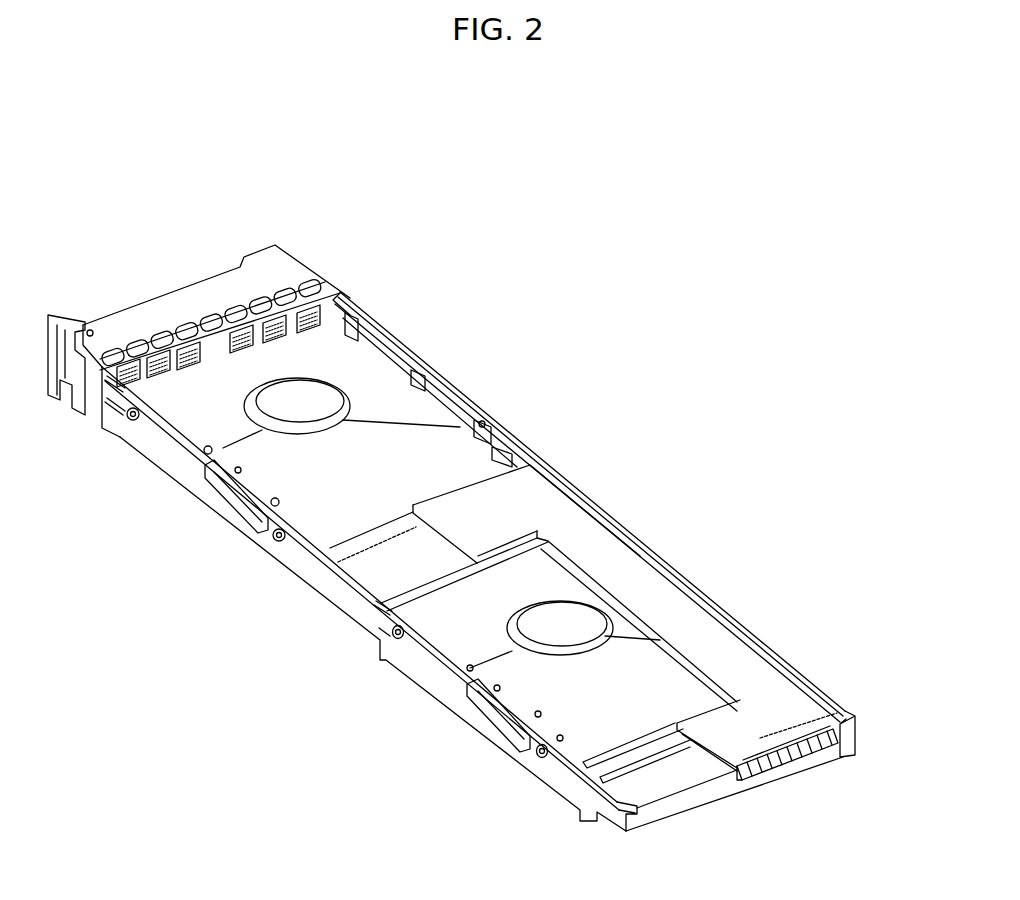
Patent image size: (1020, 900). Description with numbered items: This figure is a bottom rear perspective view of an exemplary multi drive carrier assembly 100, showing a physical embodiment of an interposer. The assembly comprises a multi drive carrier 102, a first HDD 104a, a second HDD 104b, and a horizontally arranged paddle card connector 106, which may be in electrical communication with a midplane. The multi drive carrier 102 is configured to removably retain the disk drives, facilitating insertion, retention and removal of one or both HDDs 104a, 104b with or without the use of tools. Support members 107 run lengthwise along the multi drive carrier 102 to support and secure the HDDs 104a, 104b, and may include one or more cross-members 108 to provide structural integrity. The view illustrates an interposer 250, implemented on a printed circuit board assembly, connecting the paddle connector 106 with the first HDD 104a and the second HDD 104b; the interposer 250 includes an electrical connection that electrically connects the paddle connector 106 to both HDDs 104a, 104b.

The multi drive carrier assembly 100 is at (143, 228).
The multi drive carrier 102 is at (212, 510).
The first HDD 104a is at (322, 415).
The second HDD 104b is at (587, 632).
The paddle card connector 106 is at (810, 760).
The support members 107 is at (560, 476).
The cross-member 108 is at (652, 808).
The interposer 250 is at (782, 727).